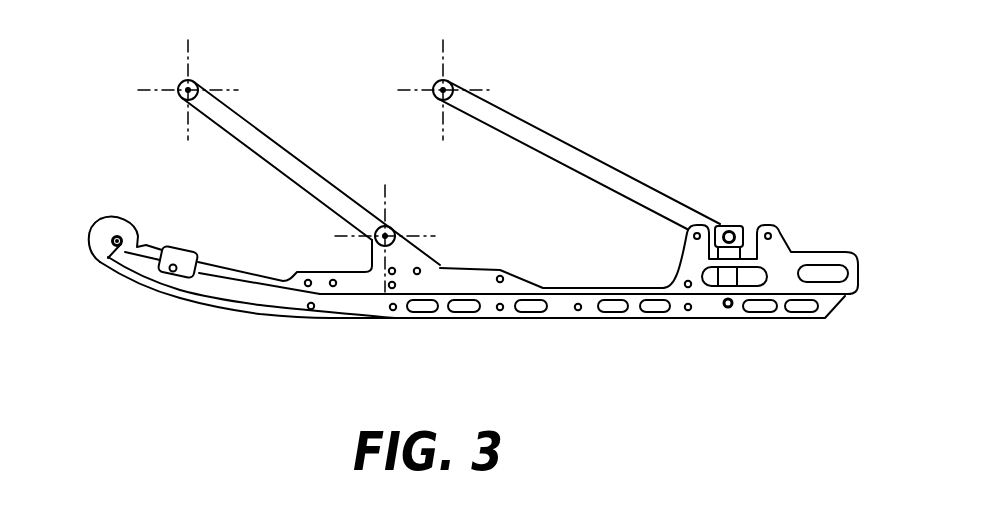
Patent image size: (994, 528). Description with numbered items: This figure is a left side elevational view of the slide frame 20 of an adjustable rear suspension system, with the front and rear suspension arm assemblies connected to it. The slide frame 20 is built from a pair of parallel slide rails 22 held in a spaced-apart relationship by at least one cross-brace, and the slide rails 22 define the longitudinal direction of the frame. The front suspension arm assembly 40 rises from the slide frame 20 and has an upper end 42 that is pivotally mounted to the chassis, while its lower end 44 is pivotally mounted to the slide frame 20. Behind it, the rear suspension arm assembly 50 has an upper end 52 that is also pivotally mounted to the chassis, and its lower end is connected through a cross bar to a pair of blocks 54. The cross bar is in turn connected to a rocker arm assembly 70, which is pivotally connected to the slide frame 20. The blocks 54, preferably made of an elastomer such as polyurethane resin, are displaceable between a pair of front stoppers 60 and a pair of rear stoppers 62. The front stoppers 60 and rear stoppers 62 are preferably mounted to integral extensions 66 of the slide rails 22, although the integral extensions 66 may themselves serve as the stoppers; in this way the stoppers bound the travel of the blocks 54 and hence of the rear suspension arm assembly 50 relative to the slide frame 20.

The slide frame 20 is at (410, 282).
The slide rails 22 is at (566, 324).
The front suspension arm assembly 40 is at (300, 158).
The upper end 42 is at (197, 83).
The lower end 44 is at (395, 226).
The rear suspension arm assembly 50 is at (580, 140).
The upper end 52 is at (452, 82).
The blocks 54 is at (741, 224).
The front stoppers 60 is at (681, 232).
The rear stoppers 62 is at (760, 220).
The integral extensions 66 is at (697, 248).
The rocker arm assembly 70 is at (727, 280).